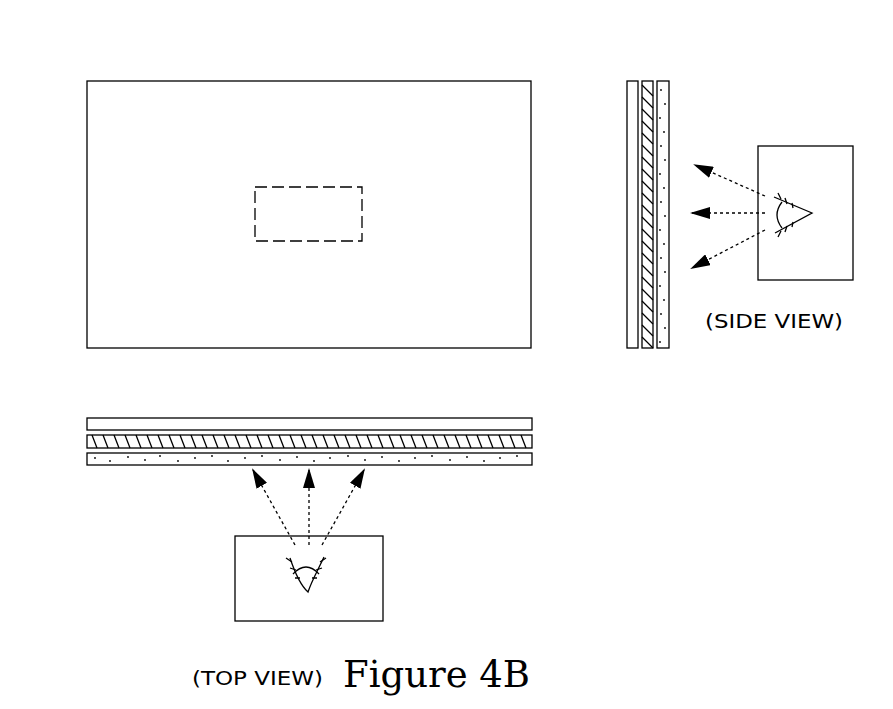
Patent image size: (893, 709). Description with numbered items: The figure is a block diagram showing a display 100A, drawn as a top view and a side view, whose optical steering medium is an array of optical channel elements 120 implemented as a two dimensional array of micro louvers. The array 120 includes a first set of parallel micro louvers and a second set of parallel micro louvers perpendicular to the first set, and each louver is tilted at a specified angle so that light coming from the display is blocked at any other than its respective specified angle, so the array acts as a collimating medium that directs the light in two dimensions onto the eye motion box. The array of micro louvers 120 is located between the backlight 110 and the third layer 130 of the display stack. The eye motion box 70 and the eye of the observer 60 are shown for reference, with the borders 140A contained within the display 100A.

The display 100A is at (183, 80).
The borders 140A is at (308, 187).
The backlight 110 is at (157, 418).
The array of micro louvers 120 is at (87, 437).
The third layer 130 is at (85, 464).
The eye motion box 70 is at (236, 578).
The eye of the observer 60 is at (318, 582).